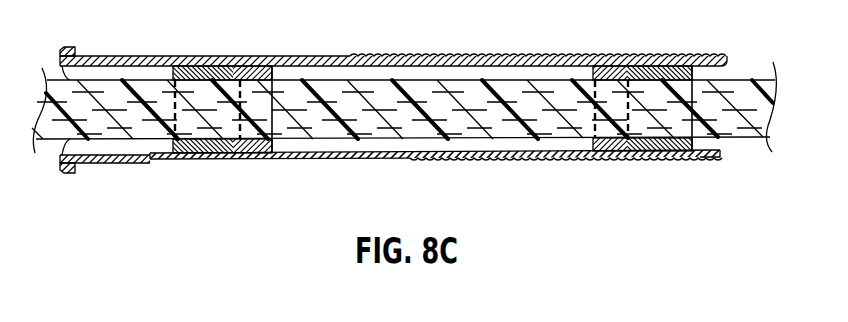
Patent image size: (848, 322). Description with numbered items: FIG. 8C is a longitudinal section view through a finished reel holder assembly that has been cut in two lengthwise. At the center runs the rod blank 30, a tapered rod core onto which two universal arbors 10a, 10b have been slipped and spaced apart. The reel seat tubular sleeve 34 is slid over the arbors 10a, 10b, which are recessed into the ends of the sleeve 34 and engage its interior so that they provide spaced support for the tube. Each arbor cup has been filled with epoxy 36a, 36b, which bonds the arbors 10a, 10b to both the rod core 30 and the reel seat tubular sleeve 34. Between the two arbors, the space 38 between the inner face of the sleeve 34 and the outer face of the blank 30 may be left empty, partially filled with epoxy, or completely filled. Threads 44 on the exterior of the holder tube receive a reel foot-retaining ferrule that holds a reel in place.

The universal arbor 10a is at (208, 155).
The universal arbor 10b is at (707, 157).
The rod blank 30 is at (362, 117).
The reel seat tubular sleeve 34 is at (352, 57).
The epoxy 36a is at (265, 156).
The epoxy 36b is at (613, 157).
The space 38 is at (503, 145).
The threads 44 is at (585, 58).